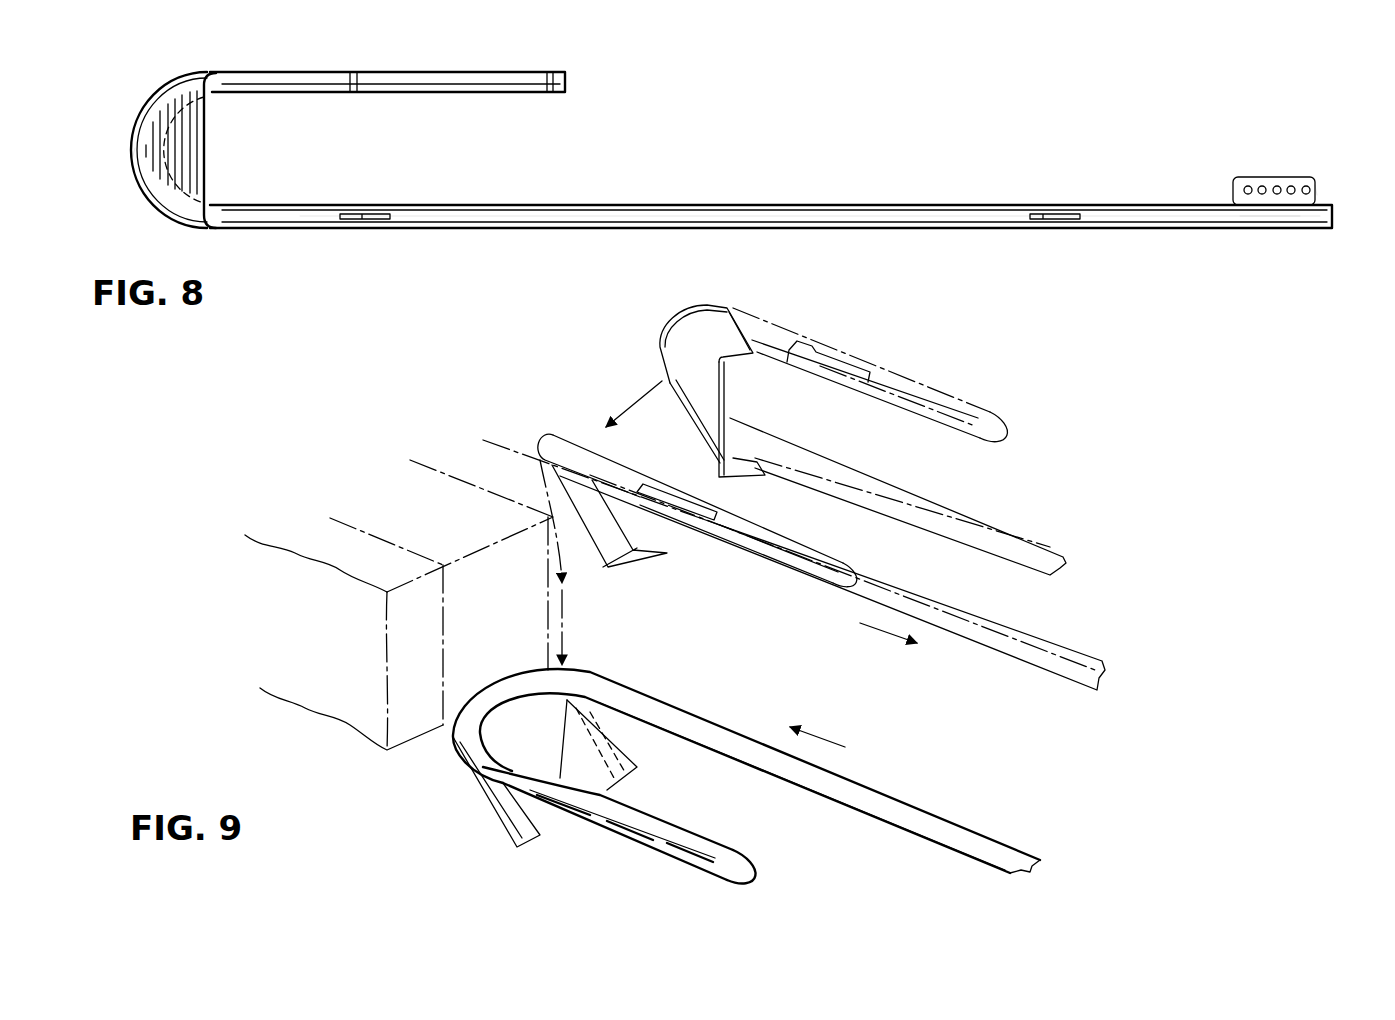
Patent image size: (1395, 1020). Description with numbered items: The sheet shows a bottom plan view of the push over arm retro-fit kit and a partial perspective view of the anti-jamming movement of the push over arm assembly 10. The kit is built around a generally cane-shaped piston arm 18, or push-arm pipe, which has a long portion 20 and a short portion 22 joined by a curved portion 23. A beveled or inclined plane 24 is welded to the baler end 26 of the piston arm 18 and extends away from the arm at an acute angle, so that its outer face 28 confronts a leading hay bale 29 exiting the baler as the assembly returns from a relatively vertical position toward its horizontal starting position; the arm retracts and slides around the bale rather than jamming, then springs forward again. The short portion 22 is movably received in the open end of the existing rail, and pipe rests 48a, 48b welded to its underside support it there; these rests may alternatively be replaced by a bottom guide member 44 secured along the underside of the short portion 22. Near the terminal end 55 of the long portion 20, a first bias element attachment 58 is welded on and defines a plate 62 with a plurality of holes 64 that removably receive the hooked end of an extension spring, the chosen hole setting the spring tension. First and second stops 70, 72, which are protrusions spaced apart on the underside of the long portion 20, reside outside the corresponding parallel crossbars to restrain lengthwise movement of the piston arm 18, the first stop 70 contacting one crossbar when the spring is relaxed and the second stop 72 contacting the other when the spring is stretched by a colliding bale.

In FIG. 9, the push over arm assembly 10 is at (632, 336).
In FIG. 8, the piston arm 18 is at (683, 203).
In FIG. 9, the piston arm 18 is at (965, 398).
In FIG. 8, the long portion 20 is at (781, 205).
In FIG. 9, the long portion 20 is at (1032, 540).
In FIG. 8, the short portion 22 is at (293, 72).
In FIG. 9, the short portion 22 is at (902, 376).
In FIG. 8, the curved portion 23 is at (133, 150).
In FIG. 9, the curved portion 23 is at (665, 328).
In FIG. 8, the inclined plane 24 is at (208, 148).
In FIG. 9, the inclined plane 24 is at (735, 437).
In FIG. 8, the baler end 26 is at (128, 170).
In FIG. 9, the baler end 26 is at (673, 312).
In FIG. 8, the outer face 28 is at (184, 182).
In FIG. 9, the outer face 28 is at (702, 408).
In FIG. 9, the hay bale 29 is at (308, 707).
In FIG. 9, the bottom guide member 44 is at (876, 410).
In FIG. 8, the pipe rest 48a is at (358, 92).
In FIG. 8, the pipe rest 48b is at (556, 92).
In FIG. 8, the terminal end 55 is at (1278, 214).
In FIG. 8, the first bias element attachment 58 is at (1302, 175).
In FIG. 8, the plate 62 is at (1316, 188).
In FIG. 8, the holes 64 is at (1277, 186).
In FIG. 8, the first stop 70 is at (1056, 215).
In FIG. 8, the second stop 72 is at (360, 222).